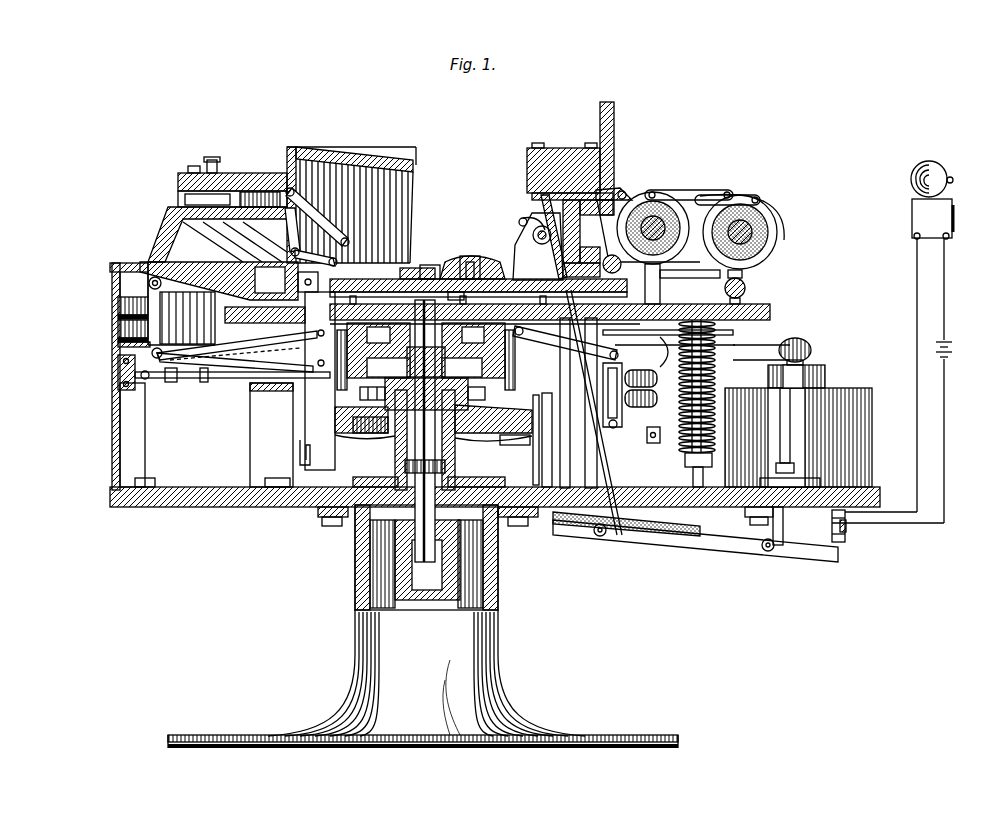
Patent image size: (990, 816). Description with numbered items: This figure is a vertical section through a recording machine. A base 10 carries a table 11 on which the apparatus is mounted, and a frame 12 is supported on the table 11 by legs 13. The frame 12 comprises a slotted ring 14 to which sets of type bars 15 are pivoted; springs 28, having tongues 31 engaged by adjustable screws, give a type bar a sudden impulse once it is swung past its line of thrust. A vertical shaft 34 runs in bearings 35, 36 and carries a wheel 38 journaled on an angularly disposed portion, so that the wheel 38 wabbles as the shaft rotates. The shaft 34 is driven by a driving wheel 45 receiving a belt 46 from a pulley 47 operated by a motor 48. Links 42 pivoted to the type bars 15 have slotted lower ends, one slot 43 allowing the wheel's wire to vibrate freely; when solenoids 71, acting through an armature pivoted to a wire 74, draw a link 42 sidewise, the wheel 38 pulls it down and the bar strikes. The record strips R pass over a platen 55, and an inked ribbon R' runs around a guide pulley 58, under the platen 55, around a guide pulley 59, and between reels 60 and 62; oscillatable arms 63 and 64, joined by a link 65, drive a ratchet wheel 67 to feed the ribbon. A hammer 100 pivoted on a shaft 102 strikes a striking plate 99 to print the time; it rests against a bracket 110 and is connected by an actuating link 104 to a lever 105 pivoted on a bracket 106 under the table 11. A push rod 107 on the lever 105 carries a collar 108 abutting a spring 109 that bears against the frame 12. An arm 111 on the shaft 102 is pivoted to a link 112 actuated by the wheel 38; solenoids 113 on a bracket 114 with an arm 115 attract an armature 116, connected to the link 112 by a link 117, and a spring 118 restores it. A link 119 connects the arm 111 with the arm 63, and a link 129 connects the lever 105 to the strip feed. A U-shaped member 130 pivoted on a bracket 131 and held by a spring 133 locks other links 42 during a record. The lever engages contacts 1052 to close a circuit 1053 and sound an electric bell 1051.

The base 10 is at (440, 672).
The table 11 is at (110, 497).
The frame 12 is at (770, 312).
The legs 13 is at (592, 536).
The slotted ring 14 is at (283, 280).
The type bars 15 is at (372, 267).
The springs 28 is at (248, 262).
The tongues 31 is at (180, 185).
The vertical shaft 34 is at (447, 448).
The bearing 35 is at (485, 520).
The bearing 36 is at (462, 279).
The wheel 38 is at (362, 433).
The links 42 is at (305, 395).
The slot 43 is at (300, 450).
The driving wheel 45 is at (426, 406).
The belt 46 is at (722, 348).
The pulley 47 is at (810, 346).
The motor 48 is at (798, 437).
The platen 55 is at (430, 279).
The guide pulley 58 is at (378, 361).
The guide pulley 59 is at (608, 255).
The reel 60 is at (640, 197).
The reel 62 is at (776, 240).
The oscillatable arm 63 is at (674, 190).
The oscillatable arm 64 is at (762, 192).
The link 65 is at (715, 195).
The ratchet wheel 67 is at (746, 288).
The solenoids 71 is at (118, 310).
The wire 74 is at (148, 283).
The striking plate 99 is at (455, 292).
The hammer 100 is at (540, 148).
The shaft 102 is at (520, 210).
The actuating link 104 is at (533, 232).
The lever 105 is at (652, 540).
The bracket 106 is at (832, 528).
The push rod 107 is at (762, 550).
The collar 108 is at (694, 488).
The spring 109 is at (715, 335).
The bracket 110 is at (608, 102).
The arm 111 is at (540, 199).
The link 112 is at (538, 246).
The solenoids 113 is at (640, 407).
The bracket 114 is at (672, 331).
The arm 115 is at (650, 443).
The armature 116 is at (612, 393).
The link 117 is at (565, 343).
The spring 118 is at (665, 350).
The link 119 is at (566, 200).
The link 129 is at (545, 443).
The U-shaped member 130 is at (204, 382).
The bracket 131 is at (118, 378).
The spring 133 is at (170, 383).
The electric bell 1051 is at (925, 212).
The contacts 1052 is at (846, 530).
The circuit 1053 is at (915, 318).
The record strips R is at (445, 252).
The inked ribbon R' is at (690, 287).